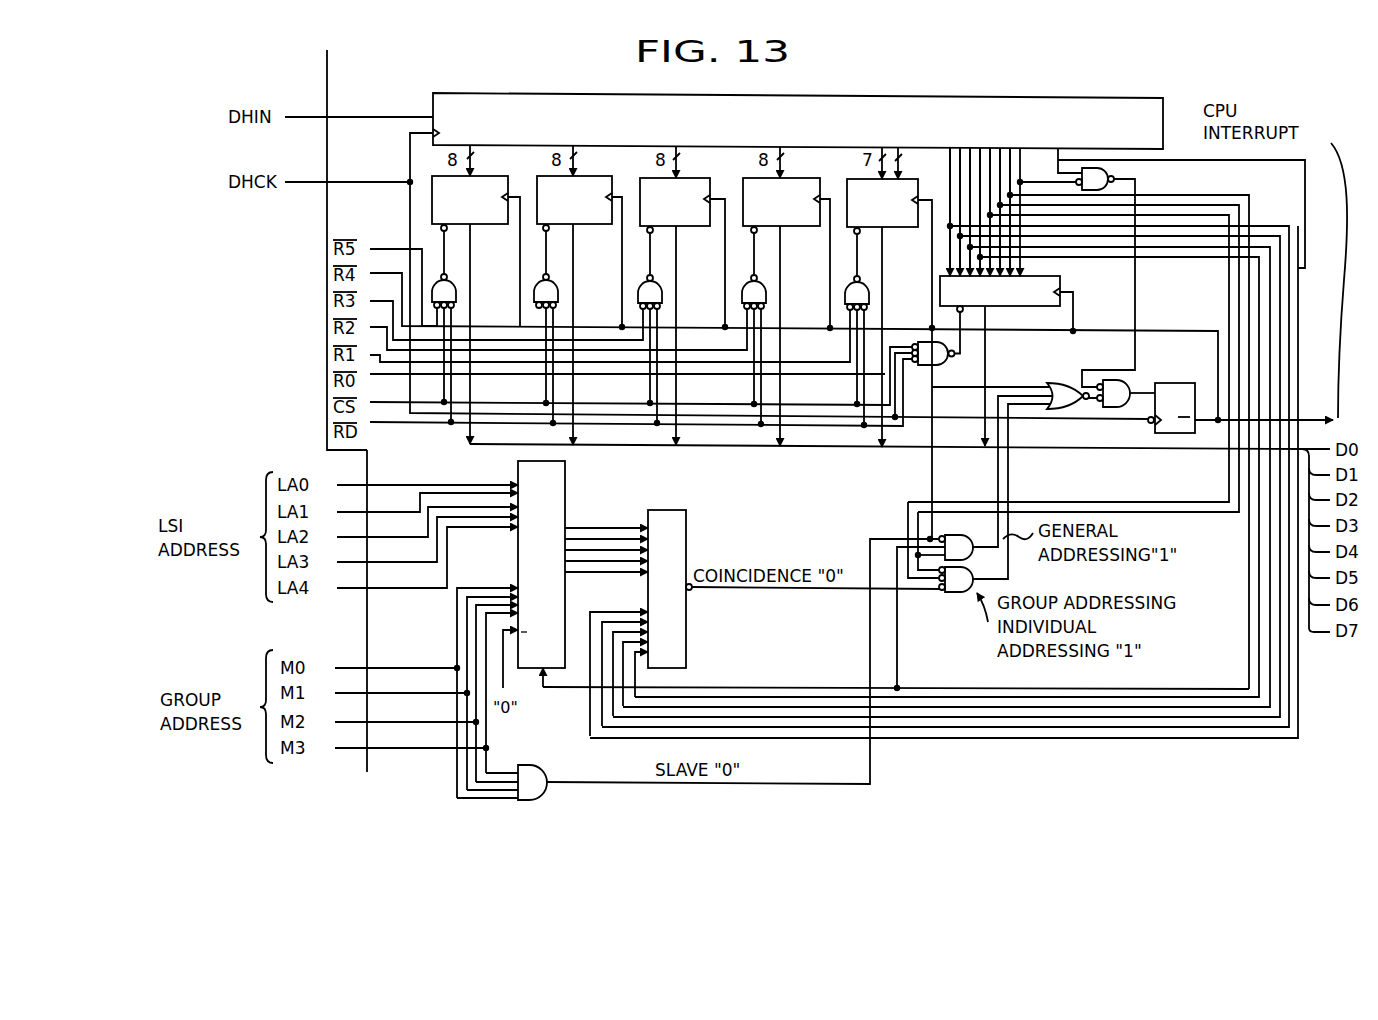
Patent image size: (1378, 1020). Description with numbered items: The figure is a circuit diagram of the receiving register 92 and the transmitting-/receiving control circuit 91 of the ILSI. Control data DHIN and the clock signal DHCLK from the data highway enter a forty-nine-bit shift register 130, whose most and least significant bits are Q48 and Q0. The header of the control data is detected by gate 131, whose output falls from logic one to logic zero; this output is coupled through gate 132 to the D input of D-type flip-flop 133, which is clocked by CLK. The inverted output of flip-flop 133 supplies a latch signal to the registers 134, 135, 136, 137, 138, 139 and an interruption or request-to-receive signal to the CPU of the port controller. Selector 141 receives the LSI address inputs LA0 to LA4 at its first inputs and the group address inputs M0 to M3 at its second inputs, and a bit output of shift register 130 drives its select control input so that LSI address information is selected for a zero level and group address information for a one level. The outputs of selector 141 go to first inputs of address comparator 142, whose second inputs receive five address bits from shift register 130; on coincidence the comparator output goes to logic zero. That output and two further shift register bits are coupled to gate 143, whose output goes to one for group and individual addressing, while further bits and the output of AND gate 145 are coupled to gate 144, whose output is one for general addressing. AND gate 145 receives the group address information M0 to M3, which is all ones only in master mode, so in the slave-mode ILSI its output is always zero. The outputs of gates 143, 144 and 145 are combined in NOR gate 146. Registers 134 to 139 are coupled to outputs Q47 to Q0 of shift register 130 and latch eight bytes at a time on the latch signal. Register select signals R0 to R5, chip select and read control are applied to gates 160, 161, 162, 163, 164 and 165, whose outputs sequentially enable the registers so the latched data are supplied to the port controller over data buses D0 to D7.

The control circuit 91 is at (609, 503).
The receiving register 92 is at (481, 85).
The 49-bit shift register 130 is at (555, 104).
The gate 131 is at (1109, 172).
The gate 132 is at (1112, 380).
The D-type flip-flop 133 is at (1182, 383).
The register 134 is at (1063, 285).
The register 135 is at (906, 179).
The register 136 is at (799, 179).
The register 137 is at (696, 179).
The register 138 is at (593, 179).
The register 139 is at (489, 179).
The selector 141 is at (555, 476).
The address comparator 142 is at (678, 522).
The gate 143 is at (956, 593).
The gate 144 is at (947, 535).
The AND gate 145 is at (532, 770).
The NOR gate 146 is at (1060, 383).
The gate 160 is at (950, 362).
The gate 161 is at (865, 295).
The gate 162 is at (762, 294).
The gate 163 is at (658, 294).
The gate 164 is at (554, 293).
The gate 165 is at (452, 293).